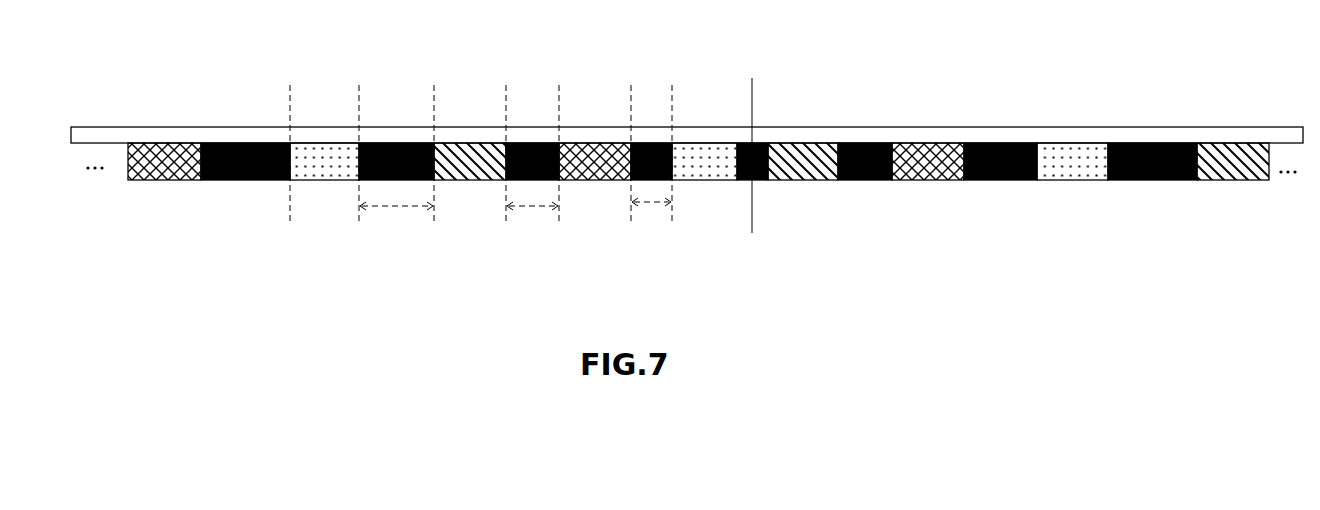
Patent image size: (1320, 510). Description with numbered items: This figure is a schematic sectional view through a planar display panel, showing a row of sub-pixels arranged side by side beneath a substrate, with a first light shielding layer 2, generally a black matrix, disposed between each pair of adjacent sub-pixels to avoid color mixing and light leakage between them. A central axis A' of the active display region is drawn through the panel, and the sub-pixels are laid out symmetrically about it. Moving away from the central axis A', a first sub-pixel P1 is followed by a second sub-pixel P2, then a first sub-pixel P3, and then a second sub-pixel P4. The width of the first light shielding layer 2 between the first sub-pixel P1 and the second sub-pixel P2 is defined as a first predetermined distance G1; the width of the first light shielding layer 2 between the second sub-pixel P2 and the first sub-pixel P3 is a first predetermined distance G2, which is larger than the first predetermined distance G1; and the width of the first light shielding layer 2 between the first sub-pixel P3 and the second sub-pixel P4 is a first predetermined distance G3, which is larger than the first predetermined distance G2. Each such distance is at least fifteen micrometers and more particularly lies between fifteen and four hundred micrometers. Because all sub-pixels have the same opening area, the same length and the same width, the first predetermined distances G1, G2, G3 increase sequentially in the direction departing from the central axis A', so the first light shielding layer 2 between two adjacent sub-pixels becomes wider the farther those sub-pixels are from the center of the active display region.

The first light shielding layer 2 is at (250, 144).
The second sub-pixel P4 is at (347, 170).
The first sub-pixel P3 is at (488, 167).
The second sub-pixel P2 is at (610, 157).
The first sub-pixel P1 is at (717, 150).
The central axis A' is at (753, 144).
The first predetermined distance G3 is at (396, 217).
The first predetermined distance G2 is at (532, 217).
The first predetermined distance G1 is at (651, 214).